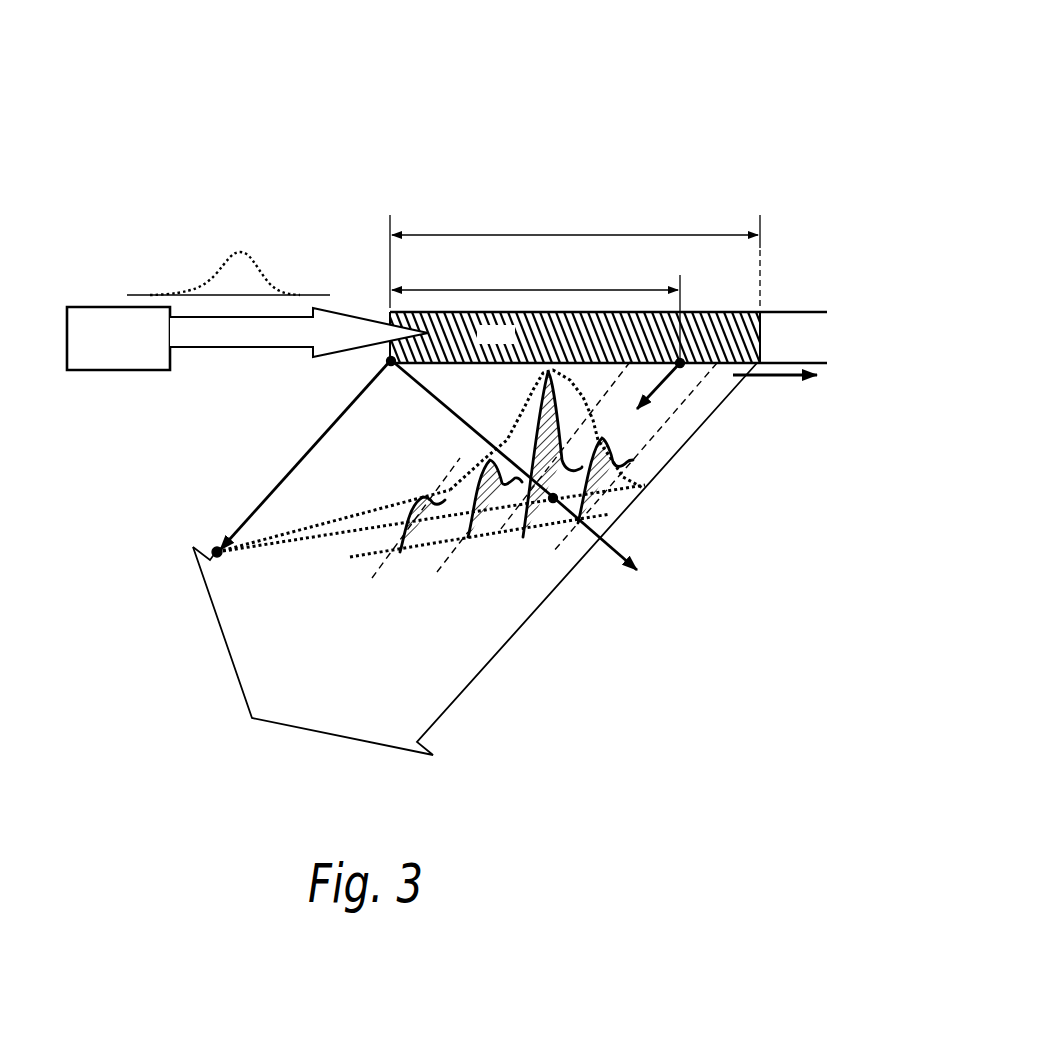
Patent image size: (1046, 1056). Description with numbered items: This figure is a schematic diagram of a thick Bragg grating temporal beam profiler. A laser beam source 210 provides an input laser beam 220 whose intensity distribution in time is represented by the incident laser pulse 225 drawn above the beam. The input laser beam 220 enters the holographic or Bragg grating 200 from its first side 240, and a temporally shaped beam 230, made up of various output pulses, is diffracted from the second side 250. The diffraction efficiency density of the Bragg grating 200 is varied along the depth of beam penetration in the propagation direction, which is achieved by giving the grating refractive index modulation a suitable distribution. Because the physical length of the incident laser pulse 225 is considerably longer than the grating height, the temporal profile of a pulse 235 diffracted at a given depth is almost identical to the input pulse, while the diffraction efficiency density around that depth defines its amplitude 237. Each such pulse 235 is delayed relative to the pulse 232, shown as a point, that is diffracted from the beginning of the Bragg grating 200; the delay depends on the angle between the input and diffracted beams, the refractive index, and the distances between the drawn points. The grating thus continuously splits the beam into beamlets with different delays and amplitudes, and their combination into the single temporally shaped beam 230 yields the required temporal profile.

The Bragg grating 200 is at (517, 330).
The laser beam source 210 is at (118, 338).
The input laser beam 220 is at (243, 347).
The incident laser pulse 225 is at (207, 275).
The temporally shaped beam 230 is at (517, 633).
The pulse diffracted from beginning of grating 232 is at (220, 540).
The diffracted pulse 235 is at (523, 537).
The amplitude 237 is at (550, 370).
The first side 240 is at (383, 352).
The second side 250 is at (726, 363).